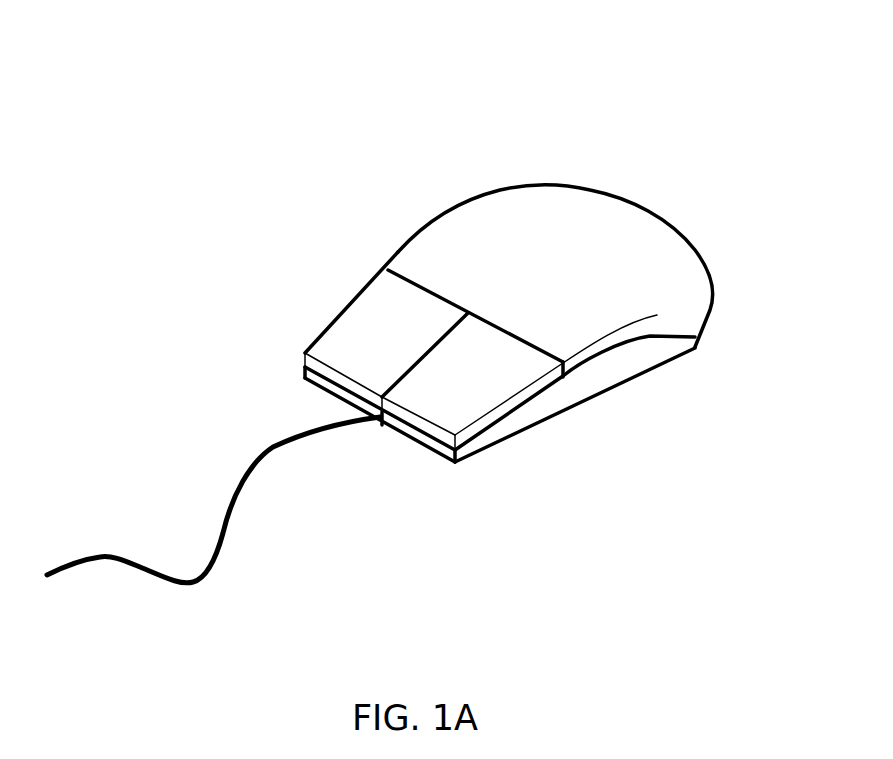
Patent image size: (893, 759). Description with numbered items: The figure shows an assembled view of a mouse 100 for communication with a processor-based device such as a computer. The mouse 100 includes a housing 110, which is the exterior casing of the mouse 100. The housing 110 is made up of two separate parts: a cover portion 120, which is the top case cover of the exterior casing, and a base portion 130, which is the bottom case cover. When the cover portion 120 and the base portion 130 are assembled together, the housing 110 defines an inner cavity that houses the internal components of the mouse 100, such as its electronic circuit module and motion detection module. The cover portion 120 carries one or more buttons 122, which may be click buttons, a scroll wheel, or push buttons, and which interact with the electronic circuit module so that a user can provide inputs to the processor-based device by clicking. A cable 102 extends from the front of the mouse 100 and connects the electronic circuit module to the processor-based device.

The mouse 100 is at (400, 312).
The cable 102 is at (250, 473).
The housing 110 is at (400, 253).
The cover portion 120 is at (543, 230).
The buttons 122 is at (367, 329).
The base portion 130 is at (587, 378).